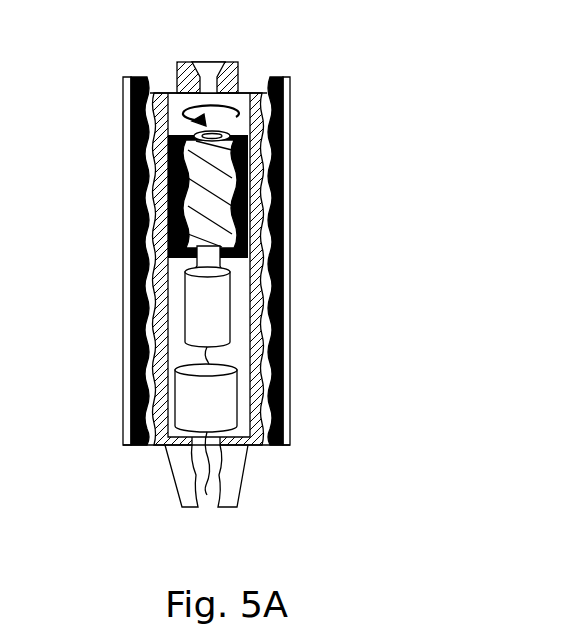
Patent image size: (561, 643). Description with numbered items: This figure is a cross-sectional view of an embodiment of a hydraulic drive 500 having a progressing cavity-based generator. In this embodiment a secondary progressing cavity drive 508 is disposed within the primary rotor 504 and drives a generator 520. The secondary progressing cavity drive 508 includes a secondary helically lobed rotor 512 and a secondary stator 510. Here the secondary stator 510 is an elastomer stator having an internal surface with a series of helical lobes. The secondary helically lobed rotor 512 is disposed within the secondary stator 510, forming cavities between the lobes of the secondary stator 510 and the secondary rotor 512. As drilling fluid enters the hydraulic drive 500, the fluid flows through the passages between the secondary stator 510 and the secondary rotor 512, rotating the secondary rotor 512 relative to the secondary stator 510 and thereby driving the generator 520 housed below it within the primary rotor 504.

The hydraulic drive 500 is at (277, 261).
The primary rotor 504 is at (257, 335).
The secondary progressing cavity drive 508 is at (198, 253).
The secondary stator 510 is at (172, 237).
The secondary helically lobed rotor 512 is at (203, 155).
The generator 520 is at (192, 310).